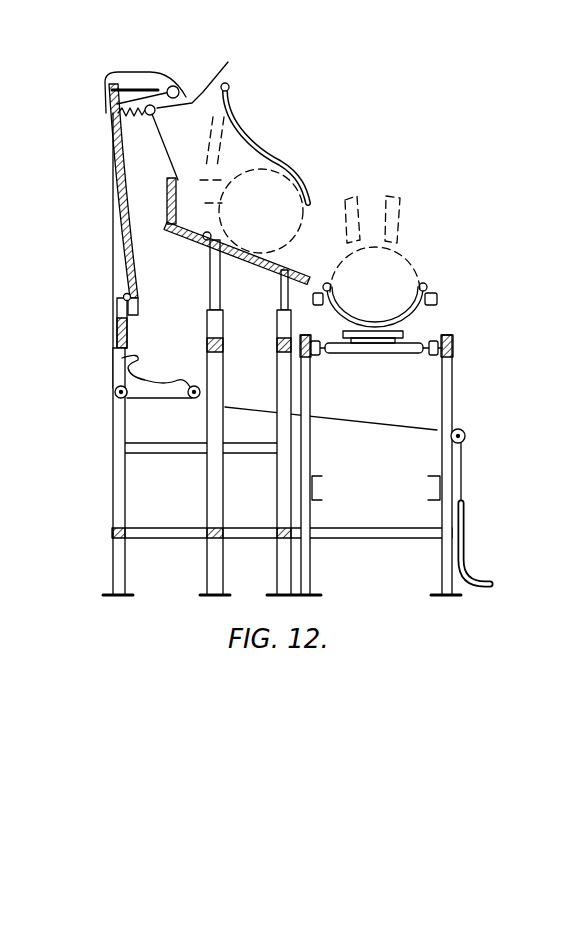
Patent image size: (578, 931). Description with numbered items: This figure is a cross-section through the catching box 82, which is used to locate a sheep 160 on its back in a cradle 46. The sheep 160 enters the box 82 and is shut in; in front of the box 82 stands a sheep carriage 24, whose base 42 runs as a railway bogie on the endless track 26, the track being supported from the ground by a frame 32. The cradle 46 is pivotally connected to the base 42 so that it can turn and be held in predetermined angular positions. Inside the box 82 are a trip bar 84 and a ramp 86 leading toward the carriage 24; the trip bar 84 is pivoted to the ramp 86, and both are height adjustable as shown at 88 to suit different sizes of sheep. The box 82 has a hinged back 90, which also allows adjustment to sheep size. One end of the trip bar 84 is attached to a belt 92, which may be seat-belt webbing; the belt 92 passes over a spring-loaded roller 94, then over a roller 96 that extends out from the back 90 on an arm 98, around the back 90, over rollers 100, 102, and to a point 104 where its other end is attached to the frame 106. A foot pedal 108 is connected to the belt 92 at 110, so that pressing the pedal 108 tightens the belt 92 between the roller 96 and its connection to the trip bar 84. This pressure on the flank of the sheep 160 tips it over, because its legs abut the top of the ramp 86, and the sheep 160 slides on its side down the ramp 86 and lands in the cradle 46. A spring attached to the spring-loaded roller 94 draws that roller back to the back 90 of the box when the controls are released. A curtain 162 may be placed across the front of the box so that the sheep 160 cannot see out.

The sheep carriage 24 is at (468, 301).
The endless track 26 is at (464, 341).
The frame 32 is at (456, 395).
The base 42 is at (397, 347).
The cradle 46 is at (427, 292).
The catching box 82 is at (243, 75).
The trip bar 84 is at (180, 226).
The ramp 86 is at (282, 255).
The height adjustment 88 is at (278, 288).
The hinged back 90 is at (122, 203).
The belt 92 is at (160, 140).
The spring-loaded roller 94 is at (205, 70).
The roller 96 is at (176, 86).
The arm 98 is at (133, 88).
The roller 100 is at (114, 400).
The roller 102 is at (196, 398).
The attachment point 104 is at (122, 358).
The frame 106 is at (117, 323).
The foot pedal 108 is at (468, 553).
The connection point 110 is at (190, 398).
The sheep 160 is at (390, 258).
The curtain 162 is at (238, 130).